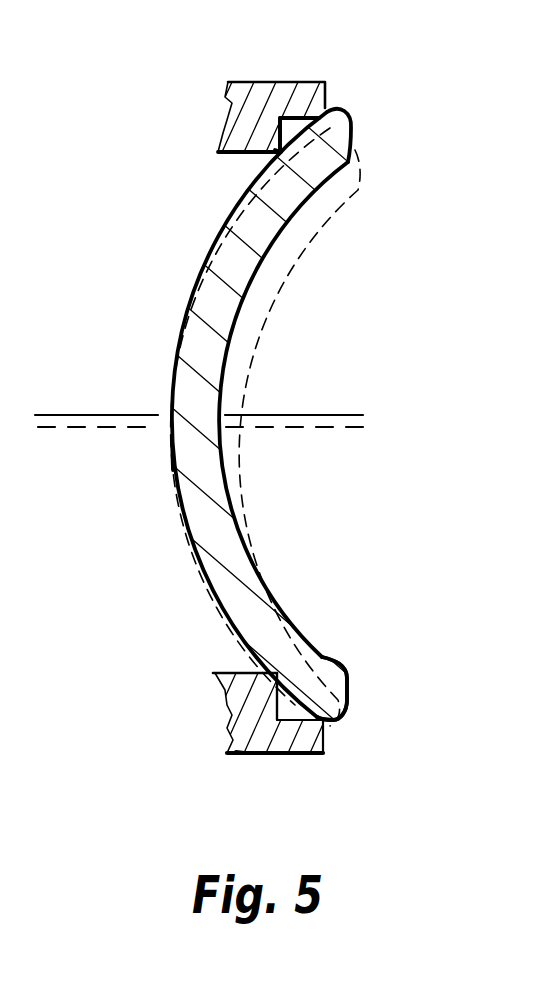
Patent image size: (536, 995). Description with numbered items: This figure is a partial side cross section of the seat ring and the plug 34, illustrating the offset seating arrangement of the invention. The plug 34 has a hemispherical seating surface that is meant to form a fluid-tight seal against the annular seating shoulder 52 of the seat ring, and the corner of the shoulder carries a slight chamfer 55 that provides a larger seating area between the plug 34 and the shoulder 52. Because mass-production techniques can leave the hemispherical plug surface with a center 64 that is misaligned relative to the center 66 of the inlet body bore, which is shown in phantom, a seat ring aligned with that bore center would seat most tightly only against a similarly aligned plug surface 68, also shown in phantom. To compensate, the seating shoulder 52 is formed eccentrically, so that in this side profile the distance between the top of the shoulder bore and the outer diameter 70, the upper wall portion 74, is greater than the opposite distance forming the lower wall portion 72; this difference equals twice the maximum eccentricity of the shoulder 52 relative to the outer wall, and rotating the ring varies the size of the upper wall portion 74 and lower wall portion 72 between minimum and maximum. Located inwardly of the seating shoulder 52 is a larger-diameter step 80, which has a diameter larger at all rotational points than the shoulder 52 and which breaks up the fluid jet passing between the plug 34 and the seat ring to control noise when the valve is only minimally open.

The plug 34 is at (347, 117).
The seating shoulder 52 is at (247, 150).
The chamfer 55 is at (276, 149).
The center 64 is at (139, 414).
The center of the body bore 66 is at (294, 428).
The aligned plug surface 68 is at (274, 252).
The outer diameter 70 is at (257, 755).
The lower wall portion 72 is at (291, 693).
The upper wall portion 74 is at (279, 150).
The step 80 is at (288, 90).